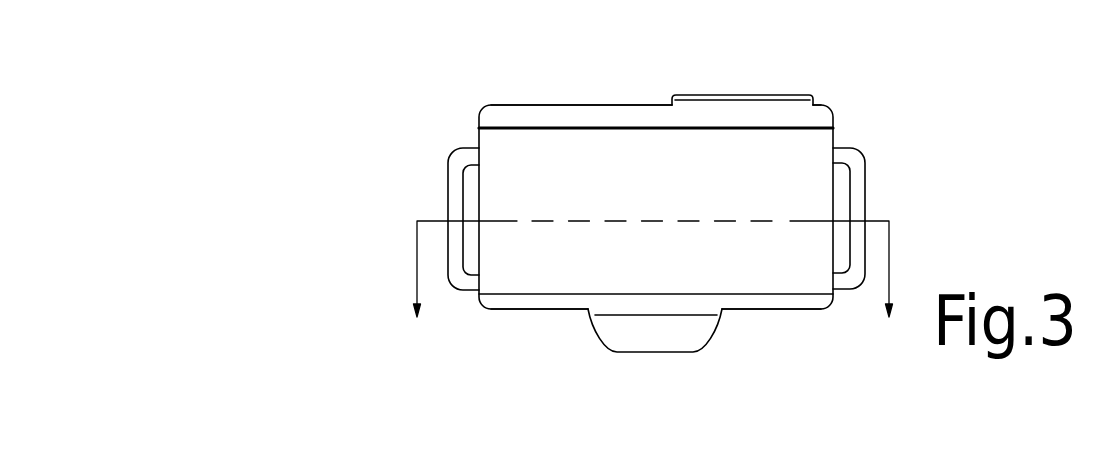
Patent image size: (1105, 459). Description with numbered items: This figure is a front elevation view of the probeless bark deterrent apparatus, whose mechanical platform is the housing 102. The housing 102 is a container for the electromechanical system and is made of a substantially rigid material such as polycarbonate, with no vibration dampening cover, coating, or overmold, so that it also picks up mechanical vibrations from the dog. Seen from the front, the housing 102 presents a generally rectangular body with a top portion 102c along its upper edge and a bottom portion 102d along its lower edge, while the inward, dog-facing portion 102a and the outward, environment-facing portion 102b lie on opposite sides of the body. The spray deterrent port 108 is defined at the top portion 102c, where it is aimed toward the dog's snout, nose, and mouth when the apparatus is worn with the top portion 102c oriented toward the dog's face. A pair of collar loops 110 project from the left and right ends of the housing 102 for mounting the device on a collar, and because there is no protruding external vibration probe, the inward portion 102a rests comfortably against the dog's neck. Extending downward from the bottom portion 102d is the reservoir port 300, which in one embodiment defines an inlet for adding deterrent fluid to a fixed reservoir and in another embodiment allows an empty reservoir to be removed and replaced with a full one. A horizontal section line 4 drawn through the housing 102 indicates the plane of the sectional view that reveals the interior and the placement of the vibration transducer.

The housing 102 is at (818, 143).
The inward portion 102a is at (530, 158).
The outward portion 102b is at (723, 458).
The top portion 102c is at (573, 105).
The bottom portion 102d is at (557, 309).
The spray deterrent port 108 is at (797, 93).
The collar loops 110 is at (448, 185).
The reservoir port 300 is at (678, 337).
The section line 4 is at (653, 284).